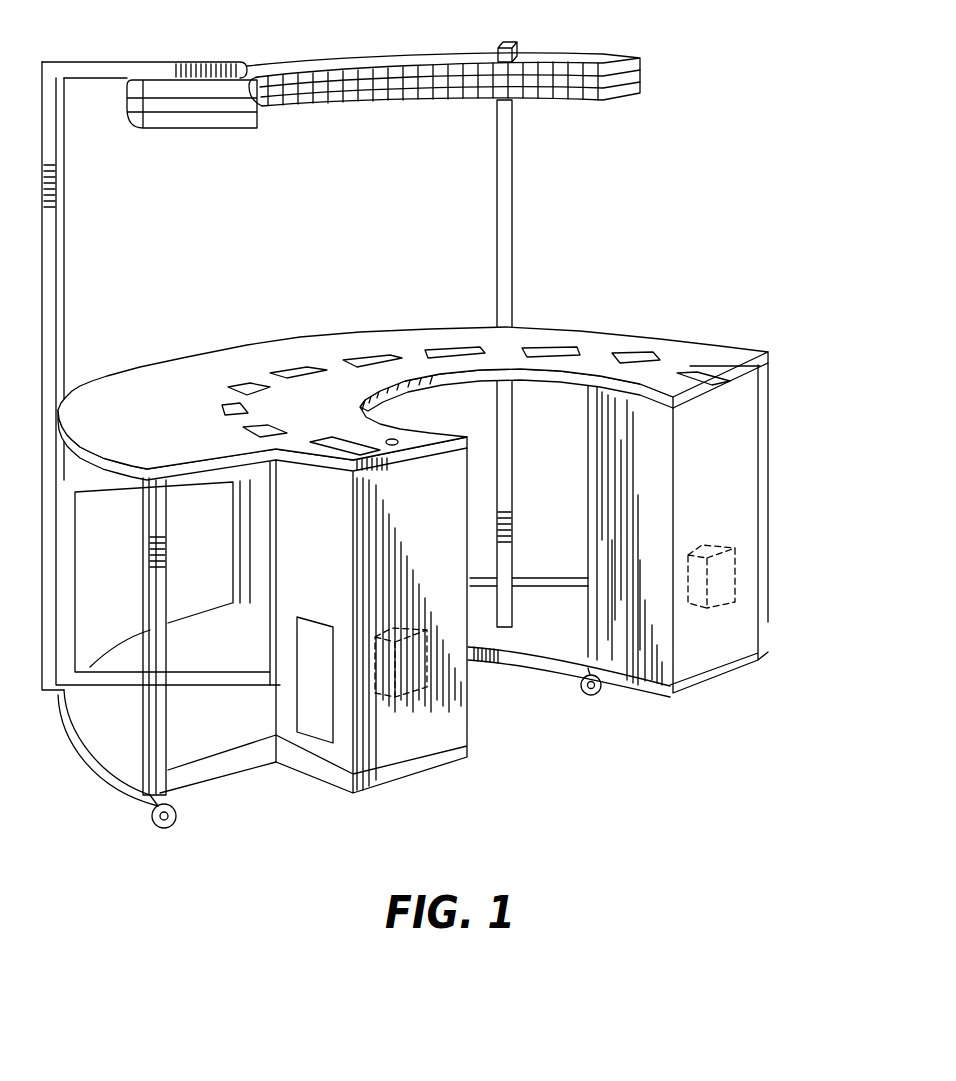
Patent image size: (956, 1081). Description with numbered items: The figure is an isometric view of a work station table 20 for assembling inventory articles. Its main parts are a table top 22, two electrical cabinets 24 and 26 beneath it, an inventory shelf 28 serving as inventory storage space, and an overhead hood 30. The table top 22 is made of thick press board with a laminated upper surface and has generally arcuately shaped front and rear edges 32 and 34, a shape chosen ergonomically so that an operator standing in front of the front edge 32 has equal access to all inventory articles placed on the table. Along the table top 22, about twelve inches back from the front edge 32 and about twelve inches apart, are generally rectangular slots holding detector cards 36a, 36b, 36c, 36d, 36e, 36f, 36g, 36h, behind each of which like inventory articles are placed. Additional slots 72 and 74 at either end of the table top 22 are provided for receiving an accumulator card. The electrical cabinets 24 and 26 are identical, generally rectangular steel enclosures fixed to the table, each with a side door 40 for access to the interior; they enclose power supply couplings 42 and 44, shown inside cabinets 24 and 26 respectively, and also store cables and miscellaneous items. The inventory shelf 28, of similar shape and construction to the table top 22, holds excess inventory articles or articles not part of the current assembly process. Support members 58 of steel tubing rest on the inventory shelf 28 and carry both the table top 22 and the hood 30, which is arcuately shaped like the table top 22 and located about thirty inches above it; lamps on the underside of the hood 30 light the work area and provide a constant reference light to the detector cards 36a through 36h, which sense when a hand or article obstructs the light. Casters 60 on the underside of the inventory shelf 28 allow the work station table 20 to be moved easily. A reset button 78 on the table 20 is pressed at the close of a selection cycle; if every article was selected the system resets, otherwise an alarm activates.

The work station table 20 is at (688, 166).
The table top 22 is at (160, 373).
The electrical cabinet 24 is at (333, 777).
The electrical cabinet 26 is at (687, 643).
The inventory shelf 28 is at (234, 645).
The hood 30 is at (567, 62).
The front edge 32 is at (550, 380).
The rear edge 34 is at (95, 460).
The detector card 36a is at (238, 431).
The detector card 36b is at (215, 408).
The detector card 36c is at (238, 386).
The detector card 36d is at (290, 362).
The detector card 36e is at (362, 350).
The detector card 36f is at (448, 342).
The detector card 36g is at (554, 341).
The detector card 36h is at (646, 351).
The side door 40 is at (308, 694).
The power supply coupling 42 is at (412, 690).
The power supply coupling 44 is at (727, 568).
The support member 58 is at (512, 228).
The caster 60 is at (155, 835).
The slot 72 is at (337, 455).
The slot 74 is at (724, 382).
The reset button 78 is at (398, 440).